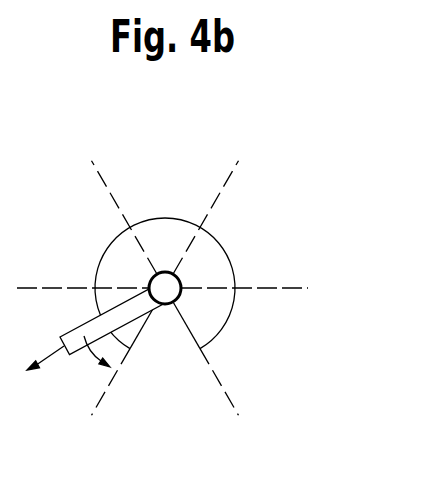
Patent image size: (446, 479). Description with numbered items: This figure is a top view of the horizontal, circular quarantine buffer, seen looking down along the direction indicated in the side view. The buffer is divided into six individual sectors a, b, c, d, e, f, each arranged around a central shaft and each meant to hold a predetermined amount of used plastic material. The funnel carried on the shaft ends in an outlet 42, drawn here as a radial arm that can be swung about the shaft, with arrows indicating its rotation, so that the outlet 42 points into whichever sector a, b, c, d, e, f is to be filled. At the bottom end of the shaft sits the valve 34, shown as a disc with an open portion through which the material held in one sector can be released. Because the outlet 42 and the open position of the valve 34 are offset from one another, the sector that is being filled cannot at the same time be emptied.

The valve 34 is at (233, 272).
The outlet 42 is at (77, 352).
The sector a is at (177, 400).
The sector b is at (272, 346).
The sector c is at (247, 246).
The sector d is at (177, 197).
The sector e is at (50, 250).
The sector f is at (53, 333).